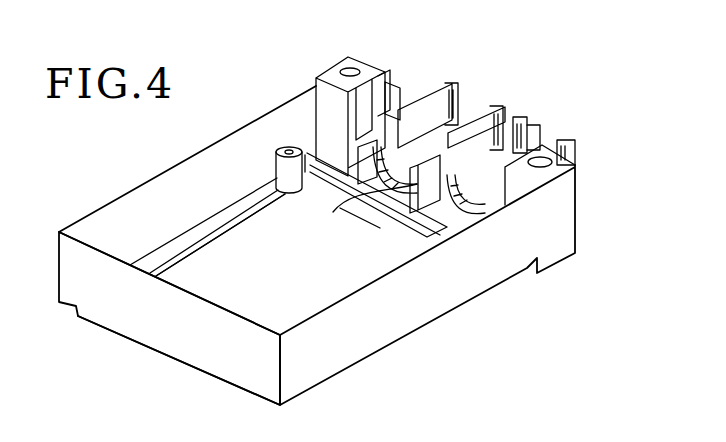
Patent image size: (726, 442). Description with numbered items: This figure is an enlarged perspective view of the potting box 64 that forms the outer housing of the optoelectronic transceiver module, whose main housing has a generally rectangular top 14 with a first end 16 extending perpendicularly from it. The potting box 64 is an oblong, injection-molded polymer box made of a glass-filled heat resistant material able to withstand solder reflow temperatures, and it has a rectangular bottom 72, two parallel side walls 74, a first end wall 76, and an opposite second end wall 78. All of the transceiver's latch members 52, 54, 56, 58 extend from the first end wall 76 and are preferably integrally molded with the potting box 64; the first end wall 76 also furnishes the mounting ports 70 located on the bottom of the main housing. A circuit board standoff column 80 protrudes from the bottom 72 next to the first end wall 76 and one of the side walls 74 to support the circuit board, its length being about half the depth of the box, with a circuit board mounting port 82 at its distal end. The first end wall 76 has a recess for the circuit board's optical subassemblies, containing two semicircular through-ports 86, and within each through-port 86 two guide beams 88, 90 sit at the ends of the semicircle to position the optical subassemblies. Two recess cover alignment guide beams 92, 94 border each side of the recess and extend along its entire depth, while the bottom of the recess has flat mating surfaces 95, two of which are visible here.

The top 14 is at (307, 358).
The first end 16 is at (636, 0).
The latch member 52 is at (449, 82).
The latch member 54 is at (494, 106).
The latch member 56 is at (519, 116).
The latch member 58 is at (562, 142).
The potting box 64 is at (365, 100).
The mounting port 70 is at (345, 68).
The bottom 72 is at (269, 291).
The side wall 74 is at (211, 197).
The first end wall 76 is at (349, 134).
The second end wall 78 is at (180, 319).
The circuit board standoff column 80 is at (292, 192).
The circuit board mounting port 82 is at (274, 146).
The semicircular through-port 86 is at (360, 183).
The guide beam 88 is at (433, 160).
The guide beam 90 is at (398, 116).
The recess cover alignment guide beam 92 is at (531, 129).
The recess cover alignment guide beam 94 is at (392, 84).
The flat mating surface 95 is at (360, 192).